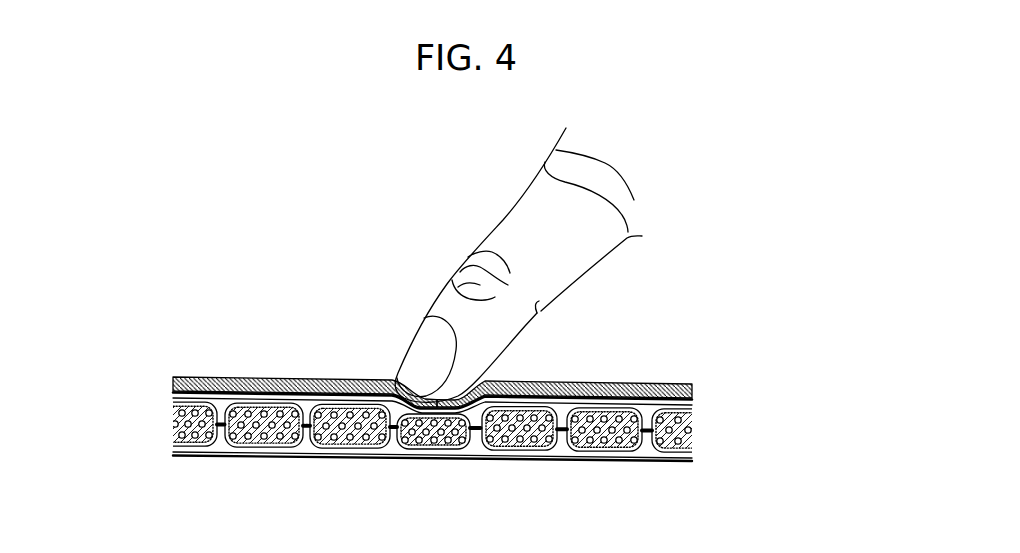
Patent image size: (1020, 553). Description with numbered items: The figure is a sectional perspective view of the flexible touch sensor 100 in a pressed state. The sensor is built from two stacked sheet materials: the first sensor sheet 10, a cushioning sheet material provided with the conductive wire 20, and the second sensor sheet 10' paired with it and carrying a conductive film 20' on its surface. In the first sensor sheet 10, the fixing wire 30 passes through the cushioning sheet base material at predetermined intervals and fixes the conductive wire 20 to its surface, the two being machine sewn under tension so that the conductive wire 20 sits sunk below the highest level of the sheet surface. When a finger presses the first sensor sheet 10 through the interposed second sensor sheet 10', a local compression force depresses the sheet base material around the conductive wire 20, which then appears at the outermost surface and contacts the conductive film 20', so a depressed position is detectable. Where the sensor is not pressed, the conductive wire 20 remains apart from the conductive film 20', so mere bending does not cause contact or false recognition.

The flexible touch sensor 100 is at (222, 360).
The first sensor sheet 10 is at (445, 460).
The second sensor sheet 10' is at (454, 365).
The conductive wire 20 is at (305, 362).
The conductive film 20' is at (564, 372).
The fixing wire 30 is at (414, 448).